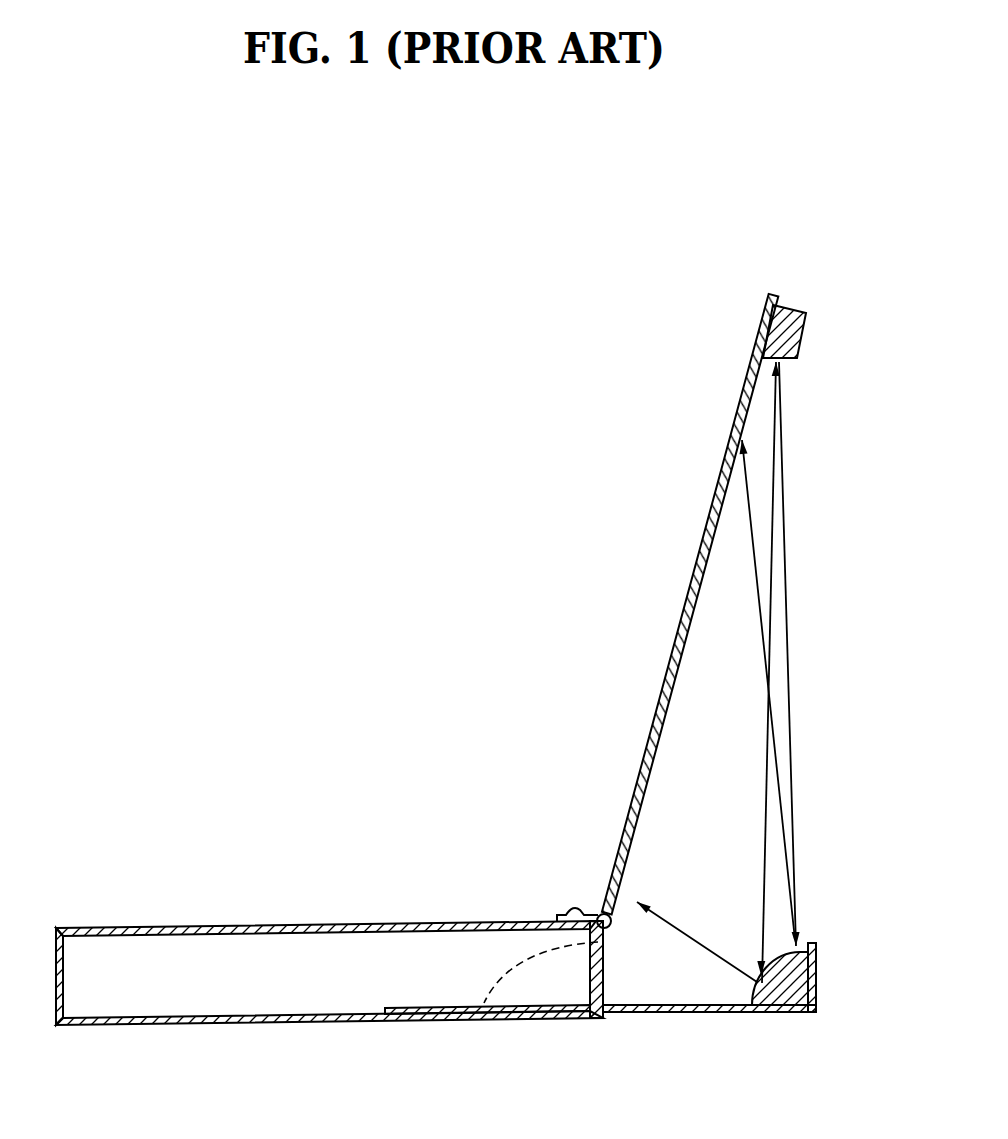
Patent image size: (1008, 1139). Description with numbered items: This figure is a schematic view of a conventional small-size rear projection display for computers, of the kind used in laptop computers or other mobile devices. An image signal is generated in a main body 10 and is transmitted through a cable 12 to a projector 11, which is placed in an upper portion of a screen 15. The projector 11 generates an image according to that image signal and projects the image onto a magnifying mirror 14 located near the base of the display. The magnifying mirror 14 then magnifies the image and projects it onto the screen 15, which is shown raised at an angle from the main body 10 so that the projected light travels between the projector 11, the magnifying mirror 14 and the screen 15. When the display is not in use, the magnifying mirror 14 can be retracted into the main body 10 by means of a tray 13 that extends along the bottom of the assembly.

The main body 10 is at (187, 926).
The projector 11 is at (798, 330).
The cable 12 is at (583, 910).
The tray 13 is at (681, 1012).
The magnifying mirror 14 is at (802, 973).
The screen 15 is at (700, 545).